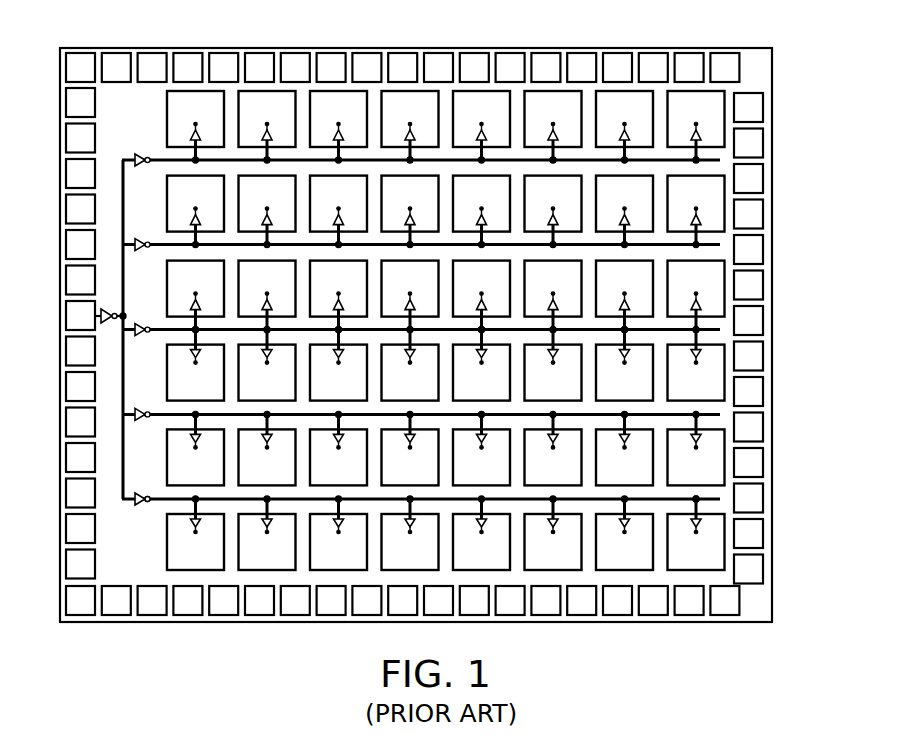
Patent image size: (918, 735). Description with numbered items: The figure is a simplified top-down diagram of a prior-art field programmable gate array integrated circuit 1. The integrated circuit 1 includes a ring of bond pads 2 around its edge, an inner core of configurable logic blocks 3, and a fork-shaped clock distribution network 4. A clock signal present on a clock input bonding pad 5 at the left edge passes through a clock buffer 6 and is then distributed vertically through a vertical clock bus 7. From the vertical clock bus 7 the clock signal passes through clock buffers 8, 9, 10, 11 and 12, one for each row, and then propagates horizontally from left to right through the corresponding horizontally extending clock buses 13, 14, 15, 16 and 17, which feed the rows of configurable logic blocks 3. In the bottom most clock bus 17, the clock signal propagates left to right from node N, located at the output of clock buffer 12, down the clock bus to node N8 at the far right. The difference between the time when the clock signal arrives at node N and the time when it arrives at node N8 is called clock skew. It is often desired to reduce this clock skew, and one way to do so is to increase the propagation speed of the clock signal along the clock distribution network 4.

The integrated circuit 1 is at (743, 48).
The bond pads 2 is at (764, 101).
The configurable logic blocks 3 is at (624, 91).
The clock distribution network 4 is at (122, 350).
The clock input bonding pad 5 is at (66, 312).
The clock buffer 6 is at (104, 311).
The vertical clock bus 7 is at (122, 212).
The clock buffer 8 is at (138, 155).
The clock buffer 9 is at (138, 240).
The clock buffer 10 is at (138, 325).
The clock buffer 11 is at (138, 410).
The clock buffer 12 is at (138, 495).
The horizontally extending clock bus 13 is at (150, 162).
The horizontally extending clock bus 14 is at (150, 247).
The horizontally extending clock bus 15 is at (150, 332).
The horizontally extending clock bus 16 is at (150, 416).
The bottom most clock bus 17 is at (163, 502).
The node N is at (150, 505).
The node N8 is at (698, 505).